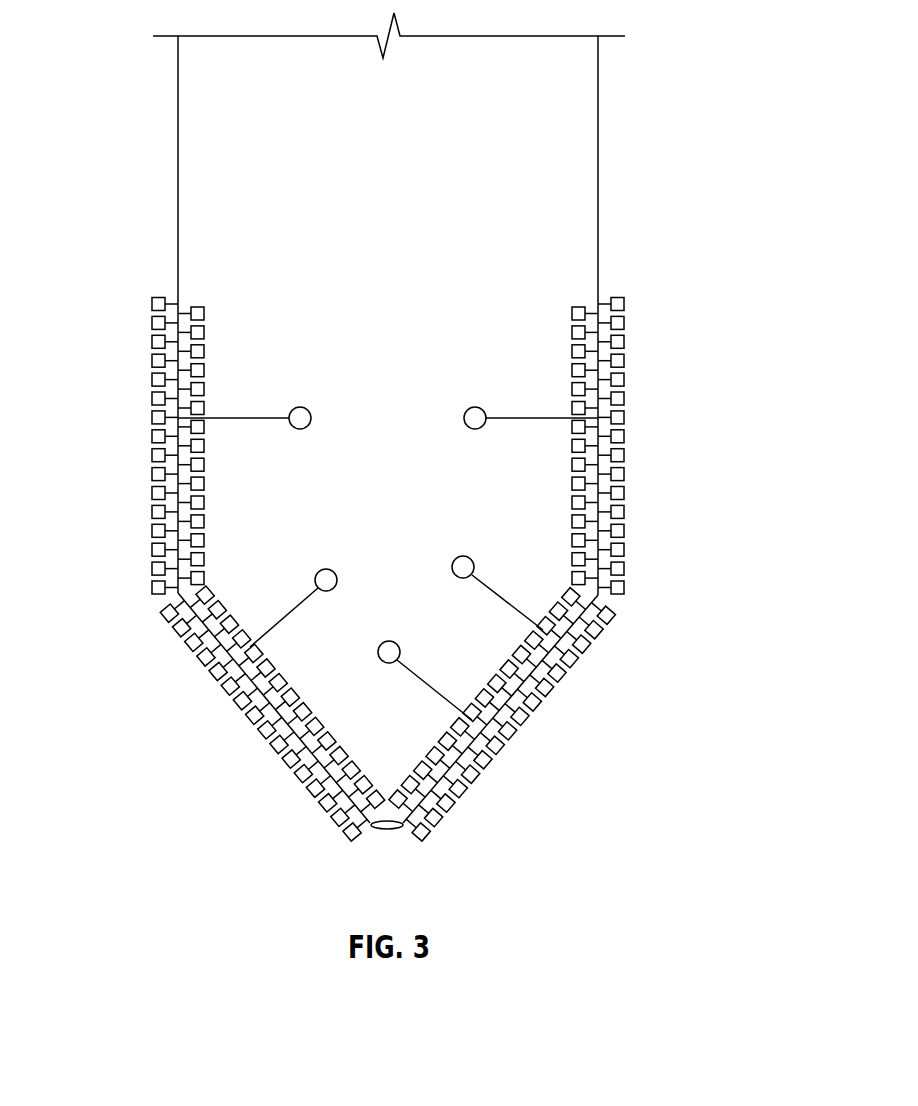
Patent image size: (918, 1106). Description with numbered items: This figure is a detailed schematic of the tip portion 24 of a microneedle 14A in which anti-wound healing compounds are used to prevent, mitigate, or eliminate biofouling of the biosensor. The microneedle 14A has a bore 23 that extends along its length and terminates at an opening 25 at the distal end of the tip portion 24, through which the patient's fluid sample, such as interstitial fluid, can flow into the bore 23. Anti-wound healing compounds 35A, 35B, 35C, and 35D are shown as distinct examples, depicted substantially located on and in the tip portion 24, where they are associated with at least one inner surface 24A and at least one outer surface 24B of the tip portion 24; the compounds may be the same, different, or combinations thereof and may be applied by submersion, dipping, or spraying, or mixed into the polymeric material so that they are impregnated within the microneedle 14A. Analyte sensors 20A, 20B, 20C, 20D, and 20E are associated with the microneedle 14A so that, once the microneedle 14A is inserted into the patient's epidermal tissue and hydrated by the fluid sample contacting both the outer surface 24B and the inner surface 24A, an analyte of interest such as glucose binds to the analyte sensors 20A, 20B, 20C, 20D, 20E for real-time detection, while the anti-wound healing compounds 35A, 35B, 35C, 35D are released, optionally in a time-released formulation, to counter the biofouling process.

The microneedle 14A is at (676, 74).
The bore 23 is at (518, 235).
The anti-wound healing compound 35A is at (625, 298).
The anti-wound healing compound 35B is at (578, 482).
The anti-wound healing compound 35C is at (305, 712).
The anti-wound healing compound 35D is at (157, 378).
The tip portion 24 is at (146, 716).
The inner surface 24A is at (212, 605).
The outer surface 24B is at (172, 600).
The opening 25 is at (388, 830).
The analyte sensor 20A is at (475, 418).
The analyte sensor 20B is at (300, 418).
The analyte sensor 20C is at (463, 567).
The analyte sensor 20D is at (326, 580).
The analyte sensor 20E is at (389, 652).